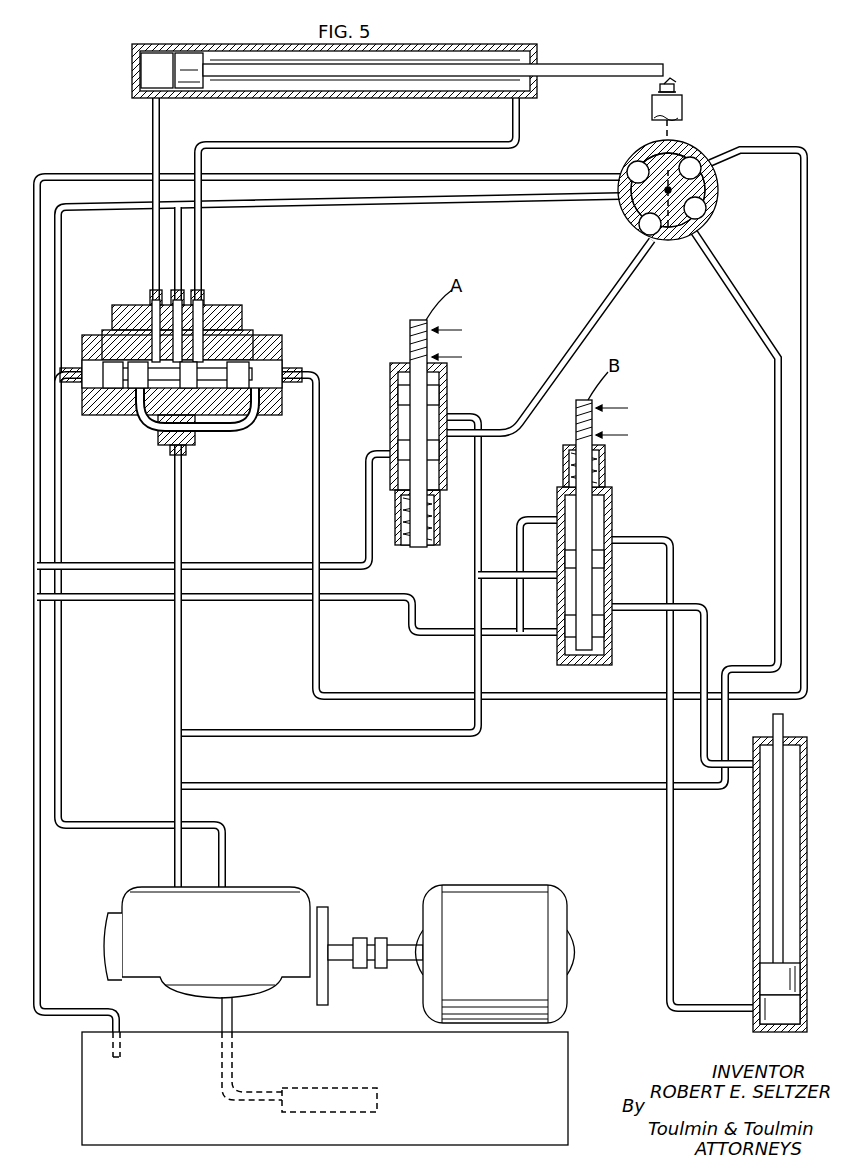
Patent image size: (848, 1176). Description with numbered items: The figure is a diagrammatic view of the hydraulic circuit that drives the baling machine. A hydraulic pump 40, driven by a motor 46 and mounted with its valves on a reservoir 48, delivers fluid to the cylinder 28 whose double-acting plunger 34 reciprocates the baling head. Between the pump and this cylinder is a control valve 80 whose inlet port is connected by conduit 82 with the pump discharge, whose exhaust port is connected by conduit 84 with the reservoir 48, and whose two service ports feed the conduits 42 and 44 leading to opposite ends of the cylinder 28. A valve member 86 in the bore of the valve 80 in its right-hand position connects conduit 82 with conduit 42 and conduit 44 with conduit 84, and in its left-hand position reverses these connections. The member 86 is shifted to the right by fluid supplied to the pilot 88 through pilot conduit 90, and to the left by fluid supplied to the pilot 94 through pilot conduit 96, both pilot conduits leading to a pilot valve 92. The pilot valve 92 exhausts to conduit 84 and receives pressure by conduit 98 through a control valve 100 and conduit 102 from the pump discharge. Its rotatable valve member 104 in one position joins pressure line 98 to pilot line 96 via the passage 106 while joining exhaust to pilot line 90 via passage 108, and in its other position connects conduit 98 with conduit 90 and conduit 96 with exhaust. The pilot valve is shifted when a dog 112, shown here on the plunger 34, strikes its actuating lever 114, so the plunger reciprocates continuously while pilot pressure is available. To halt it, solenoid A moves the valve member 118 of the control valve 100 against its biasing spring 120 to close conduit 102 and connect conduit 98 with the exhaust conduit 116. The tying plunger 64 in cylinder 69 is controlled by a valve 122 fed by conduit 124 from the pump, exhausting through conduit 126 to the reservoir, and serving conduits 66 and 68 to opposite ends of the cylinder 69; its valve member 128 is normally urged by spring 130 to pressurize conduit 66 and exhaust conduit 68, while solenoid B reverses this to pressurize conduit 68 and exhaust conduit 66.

The cylinder 28 is at (300, 44).
The plunger 34 is at (621, 64).
The hydraulic pump 40 is at (248, 912).
The conduit 42 is at (521, 121).
The conduit 44 is at (162, 127).
The motor 46 is at (503, 900).
The reservoir 48 is at (406, 1042).
The plunger 64 is at (778, 722).
The conduit 66 is at (708, 770).
The conduit 68 is at (730, 1010).
The cylinder 69 is at (753, 868).
The control valve 80 is at (195, 365).
The conduit 82 is at (182, 467).
The conduit 84 is at (112, 212).
The valve member 86 is at (240, 392).
The pilot 88 is at (118, 392).
The pilot conduit 90 is at (62, 495).
The pilot valve 92 is at (638, 186).
The pilot 94 is at (283, 341).
The pilot conduit 96 is at (318, 368).
The conduit 98 is at (632, 286).
The control valve 100 is at (422, 450).
The conduit 102 is at (464, 412).
The rotatable valve member 104 is at (618, 186).
The passage 106 is at (682, 172).
The passage 108 is at (660, 246).
The dog 112 is at (628, 80).
The actuating lever 114 is at (674, 86).
The conduit 116 is at (372, 452).
The valve member 118 is at (400, 401).
The biasing spring 120 is at (401, 536).
The valve 122 is at (620, 532).
The conduit 124 is at (522, 578).
The conduit 126 is at (538, 518).
The valve member 128 is at (600, 520).
The spring 130 is at (602, 452).